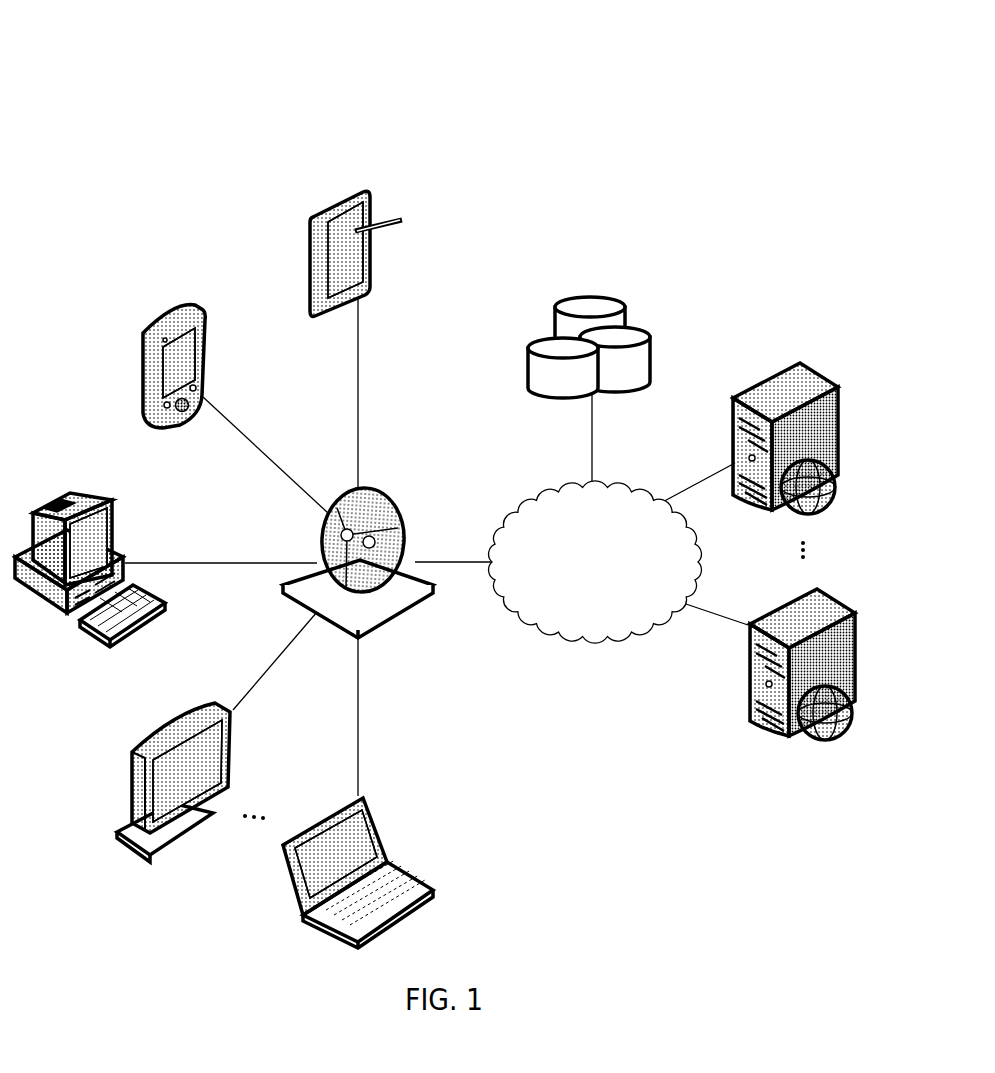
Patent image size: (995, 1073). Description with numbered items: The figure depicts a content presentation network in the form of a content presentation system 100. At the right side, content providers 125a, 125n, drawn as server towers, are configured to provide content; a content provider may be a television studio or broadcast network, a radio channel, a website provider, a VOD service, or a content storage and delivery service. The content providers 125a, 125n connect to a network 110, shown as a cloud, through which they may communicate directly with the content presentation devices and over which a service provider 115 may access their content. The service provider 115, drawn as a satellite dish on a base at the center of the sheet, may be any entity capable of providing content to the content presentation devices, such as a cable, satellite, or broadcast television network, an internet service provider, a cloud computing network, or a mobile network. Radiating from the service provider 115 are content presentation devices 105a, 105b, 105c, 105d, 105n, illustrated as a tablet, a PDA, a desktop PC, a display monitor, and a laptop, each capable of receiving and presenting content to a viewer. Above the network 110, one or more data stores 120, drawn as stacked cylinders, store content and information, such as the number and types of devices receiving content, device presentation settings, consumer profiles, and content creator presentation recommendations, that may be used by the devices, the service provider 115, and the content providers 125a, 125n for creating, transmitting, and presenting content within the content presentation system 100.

The content presentation system 100 is at (586, 76).
The content presentation device 105a is at (370, 188).
The content presentation device 105b is at (203, 318).
The content presentation device 105c is at (113, 513).
The content presentation device 105d is at (233, 760).
The content presentation device 105n is at (402, 868).
The network 110 is at (637, 492).
The service provider 115 is at (385, 492).
The data store 120 is at (600, 295).
The content provider 125a is at (817, 370).
The content provider 125n is at (835, 598).